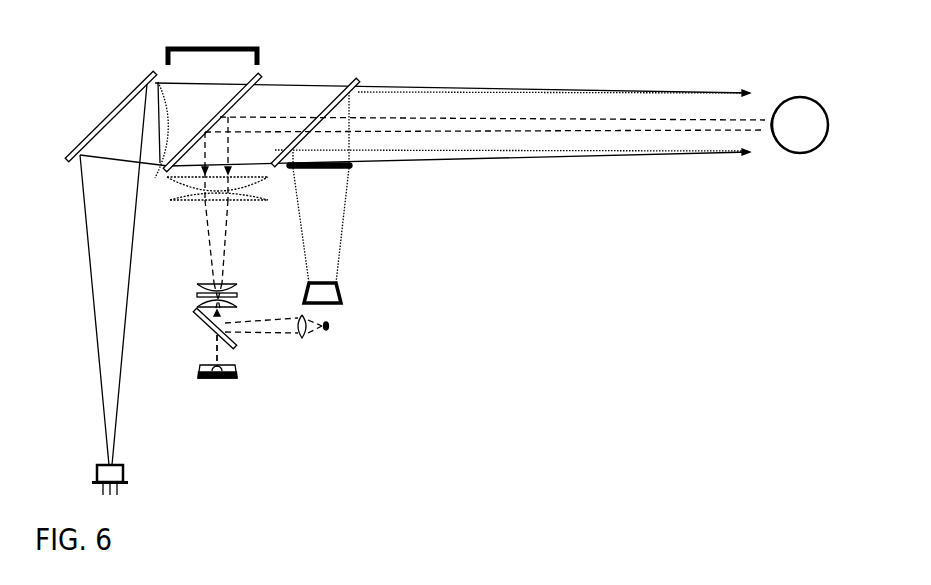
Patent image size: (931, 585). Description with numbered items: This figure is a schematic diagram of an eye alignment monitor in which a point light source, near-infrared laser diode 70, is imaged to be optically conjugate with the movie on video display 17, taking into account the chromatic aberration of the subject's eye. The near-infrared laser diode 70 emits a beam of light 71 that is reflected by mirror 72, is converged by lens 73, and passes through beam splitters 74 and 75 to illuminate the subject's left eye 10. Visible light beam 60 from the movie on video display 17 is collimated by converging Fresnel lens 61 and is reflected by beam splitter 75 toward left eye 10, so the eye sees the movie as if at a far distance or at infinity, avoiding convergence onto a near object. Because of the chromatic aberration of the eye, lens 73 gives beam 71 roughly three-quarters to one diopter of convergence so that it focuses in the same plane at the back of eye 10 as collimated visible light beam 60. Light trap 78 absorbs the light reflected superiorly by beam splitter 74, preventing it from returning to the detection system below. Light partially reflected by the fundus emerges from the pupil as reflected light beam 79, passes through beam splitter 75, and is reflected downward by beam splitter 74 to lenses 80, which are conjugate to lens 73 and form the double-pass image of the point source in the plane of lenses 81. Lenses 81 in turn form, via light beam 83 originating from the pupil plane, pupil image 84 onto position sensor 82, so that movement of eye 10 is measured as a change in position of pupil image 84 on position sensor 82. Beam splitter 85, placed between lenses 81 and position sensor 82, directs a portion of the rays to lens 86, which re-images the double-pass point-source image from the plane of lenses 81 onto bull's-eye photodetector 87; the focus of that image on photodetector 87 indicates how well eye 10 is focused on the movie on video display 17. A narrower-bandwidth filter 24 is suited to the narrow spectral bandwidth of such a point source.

The left eye 10 is at (803, 154).
The video display 17 is at (343, 297).
The narrower-bandwidth filter 24 is at (243, 292).
The visible light beam 60 is at (322, 260).
The converging Fresnel lens 61 is at (355, 169).
The near-infrared laser diode 70 is at (95, 471).
The beam of light 71 is at (116, 424).
The mirror 72 is at (118, 108).
The lens 73 is at (158, 170).
The beam splitter 74 is at (253, 78).
The beam splitter 75 is at (362, 77).
The light trap 78 is at (222, 41).
The reflected light beam 79 is at (665, 123).
The lenses 80 is at (268, 185).
The lenses 81 is at (193, 287).
The position sensor 82 is at (196, 371).
The light beam 83 is at (212, 341).
The pupil image 84 is at (236, 371).
The beam splitter 85 is at (195, 318).
The lens 86 is at (300, 343).
The bull's-eye photodetector 87 is at (333, 328).